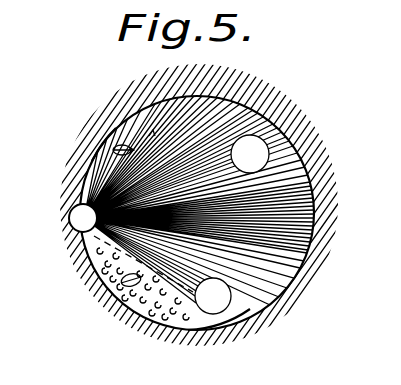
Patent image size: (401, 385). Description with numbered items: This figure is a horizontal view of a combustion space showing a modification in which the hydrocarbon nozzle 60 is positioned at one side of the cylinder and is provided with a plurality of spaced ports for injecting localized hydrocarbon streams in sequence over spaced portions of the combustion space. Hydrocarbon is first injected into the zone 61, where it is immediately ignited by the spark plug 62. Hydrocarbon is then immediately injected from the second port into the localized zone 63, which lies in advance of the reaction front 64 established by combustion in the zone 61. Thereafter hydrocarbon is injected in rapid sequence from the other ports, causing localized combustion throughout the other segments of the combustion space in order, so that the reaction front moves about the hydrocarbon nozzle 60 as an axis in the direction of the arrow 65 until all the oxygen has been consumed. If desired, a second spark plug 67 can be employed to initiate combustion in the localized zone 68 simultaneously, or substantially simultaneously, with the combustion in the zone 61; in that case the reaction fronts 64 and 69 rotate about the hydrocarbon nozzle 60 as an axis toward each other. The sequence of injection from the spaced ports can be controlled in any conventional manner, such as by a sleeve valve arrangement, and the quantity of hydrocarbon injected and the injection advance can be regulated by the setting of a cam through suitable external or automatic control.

The hydrocarbon nozzle 60 is at (58, 204).
The zone 61 is at (76, 240).
The spark plug 62 is at (80, 280).
The localized zone 63 is at (243, 300).
The reaction front 64 is at (140, 278).
The arrow 65 is at (251, 228).
The second spark plug 67 is at (92, 120).
The localized zone 68 is at (83, 155).
The reaction front 69 is at (134, 142).